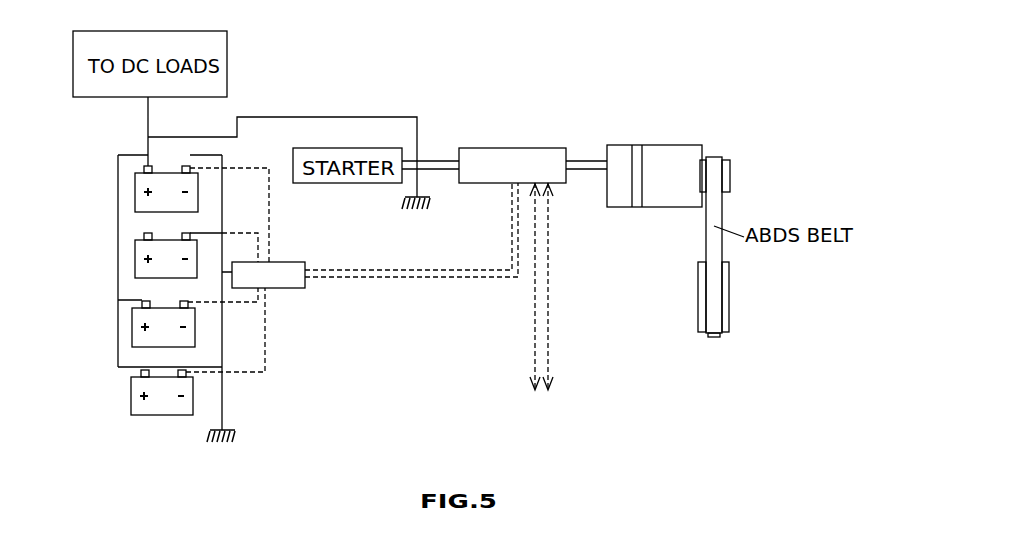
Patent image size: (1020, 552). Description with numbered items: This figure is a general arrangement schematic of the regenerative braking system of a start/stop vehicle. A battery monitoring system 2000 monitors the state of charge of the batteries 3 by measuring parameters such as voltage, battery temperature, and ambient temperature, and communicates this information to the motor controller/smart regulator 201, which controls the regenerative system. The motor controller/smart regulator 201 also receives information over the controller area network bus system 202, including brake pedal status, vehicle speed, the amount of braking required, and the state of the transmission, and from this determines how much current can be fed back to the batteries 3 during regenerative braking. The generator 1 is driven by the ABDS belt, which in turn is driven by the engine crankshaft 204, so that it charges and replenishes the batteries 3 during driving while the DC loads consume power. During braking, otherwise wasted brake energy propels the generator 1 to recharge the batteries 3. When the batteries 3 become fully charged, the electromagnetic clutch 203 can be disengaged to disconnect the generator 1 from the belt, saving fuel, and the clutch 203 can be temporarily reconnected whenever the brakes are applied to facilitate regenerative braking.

The batteries 3 is at (90, 415).
The battery monitoring system 2000 is at (290, 262).
The motor controller/smart regulator 201 is at (490, 183).
The generator 1 is at (650, 207).
The electromagnetic clutch 203 is at (730, 158).
The engine crankshaft 204 is at (729, 300).
The controller area network bus system 202 is at (640, 380).